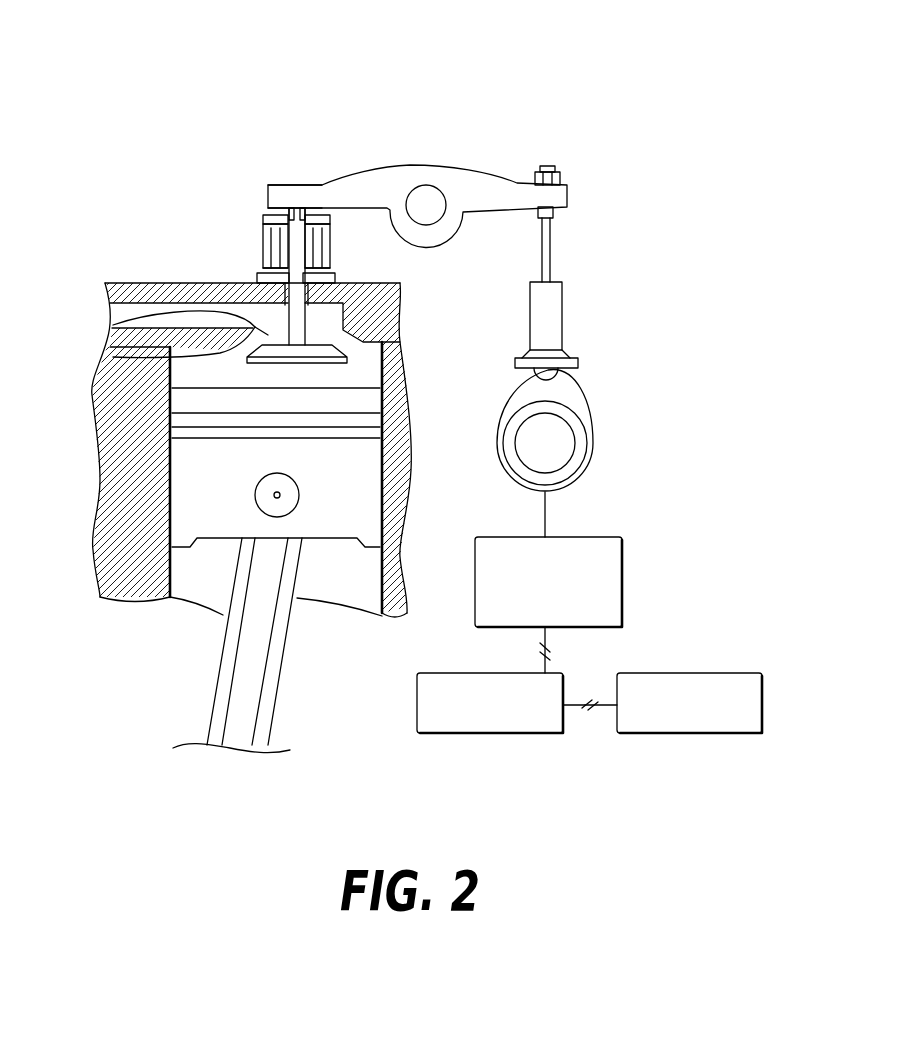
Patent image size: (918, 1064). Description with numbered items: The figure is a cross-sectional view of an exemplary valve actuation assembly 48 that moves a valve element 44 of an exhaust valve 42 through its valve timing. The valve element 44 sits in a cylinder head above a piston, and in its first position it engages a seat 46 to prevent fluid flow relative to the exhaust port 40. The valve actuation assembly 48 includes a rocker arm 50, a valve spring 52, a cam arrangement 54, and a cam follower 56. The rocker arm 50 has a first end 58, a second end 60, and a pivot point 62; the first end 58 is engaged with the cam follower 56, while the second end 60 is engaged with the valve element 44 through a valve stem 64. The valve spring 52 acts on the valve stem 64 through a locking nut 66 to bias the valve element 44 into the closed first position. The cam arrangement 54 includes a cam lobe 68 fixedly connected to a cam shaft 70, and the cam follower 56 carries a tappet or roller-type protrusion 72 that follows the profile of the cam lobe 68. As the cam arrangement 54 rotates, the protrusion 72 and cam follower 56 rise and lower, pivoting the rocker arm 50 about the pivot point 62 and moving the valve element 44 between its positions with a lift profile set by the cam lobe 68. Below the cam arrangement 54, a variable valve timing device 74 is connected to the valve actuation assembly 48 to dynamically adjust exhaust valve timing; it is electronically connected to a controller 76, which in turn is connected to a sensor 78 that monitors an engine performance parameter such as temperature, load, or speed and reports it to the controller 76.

The exhaust port 40 is at (117, 325).
The exhaust valve 42 is at (244, 268).
The valve element 44 is at (398, 325).
The seat 46 is at (113, 357).
The valve actuation assembly 48 is at (440, 104).
The rocker arm 50 is at (370, 170).
The valve spring 52 is at (320, 250).
The cam arrangement 54 is at (625, 443).
The cam follower 56 is at (563, 322).
The first end 58 is at (567, 200).
The second end 60 is at (290, 187).
The pivot point 62 is at (426, 205).
The valve stem 64 is at (265, 230).
The locking nut 66 is at (270, 212).
The cam lobe 68 is at (584, 397).
The cam shaft 70 is at (558, 453).
The protrusion 72 is at (537, 377).
The variable valve timing device 74 is at (623, 578).
The controller 76 is at (525, 733).
The sensor 78 is at (740, 733).